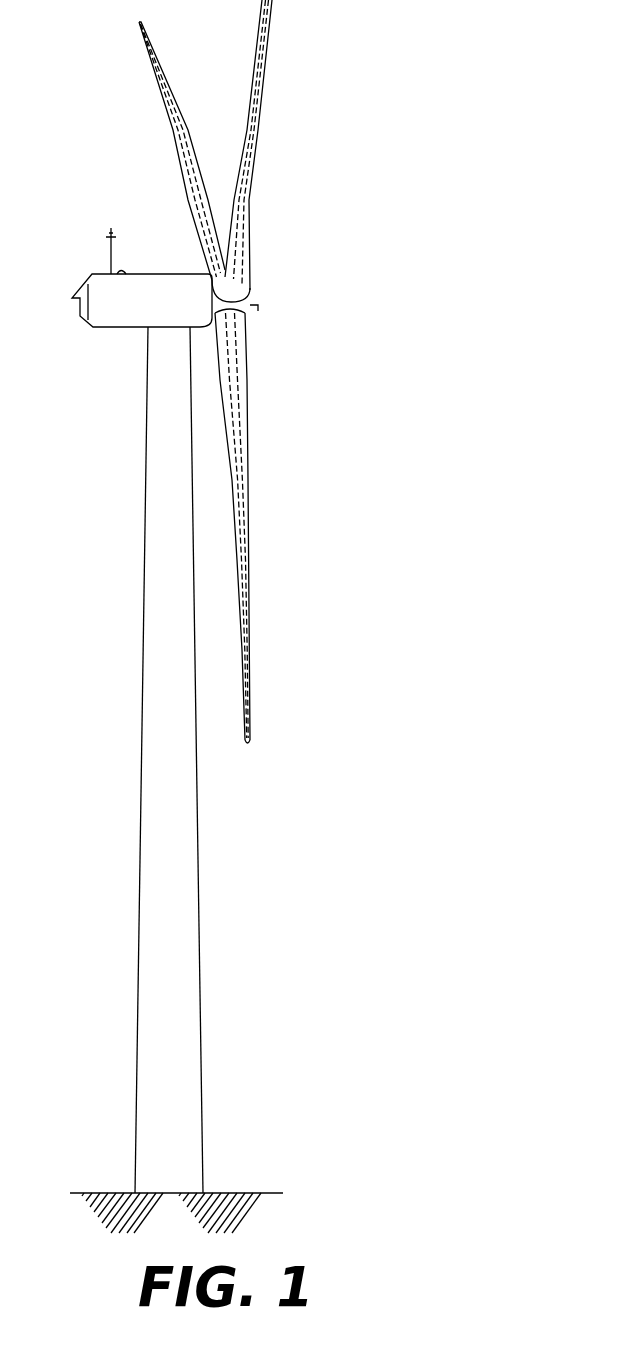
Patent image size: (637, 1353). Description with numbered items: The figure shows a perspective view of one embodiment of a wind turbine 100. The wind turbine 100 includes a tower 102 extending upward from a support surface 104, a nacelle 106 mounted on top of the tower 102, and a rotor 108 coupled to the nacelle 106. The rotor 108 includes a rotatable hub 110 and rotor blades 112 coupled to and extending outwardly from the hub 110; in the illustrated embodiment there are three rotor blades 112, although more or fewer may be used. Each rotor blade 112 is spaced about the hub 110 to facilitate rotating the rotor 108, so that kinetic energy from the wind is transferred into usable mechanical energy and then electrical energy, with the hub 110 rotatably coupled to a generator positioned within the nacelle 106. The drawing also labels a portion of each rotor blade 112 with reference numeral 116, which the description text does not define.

The wind turbine 100 is at (405, 98).
The tower 102 is at (180, 832).
The support surface 104 is at (112, 1192).
The nacelle 106 is at (120, 327).
The rotor 108 is at (302, 253).
The rotatable hub 110 is at (254, 290).
The rotor blade 112 is at (217, 371).
The blade root / pitch axis portion 116 is at (180, 167).